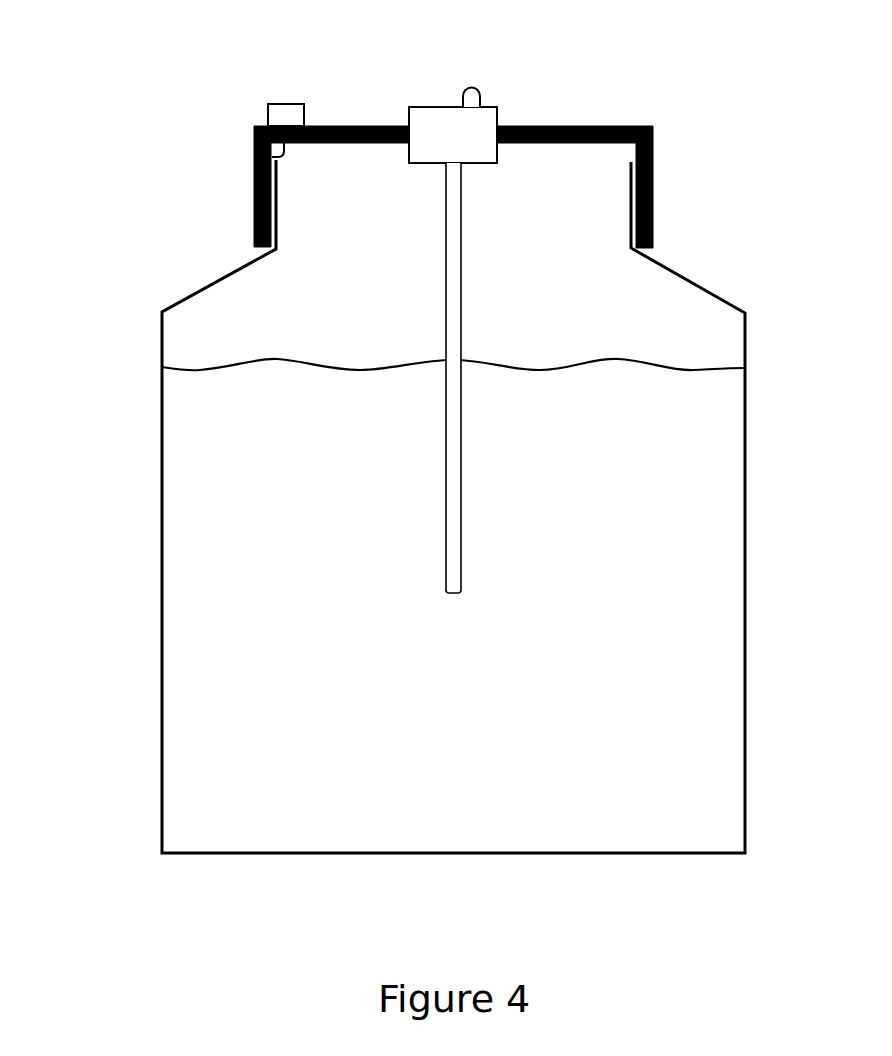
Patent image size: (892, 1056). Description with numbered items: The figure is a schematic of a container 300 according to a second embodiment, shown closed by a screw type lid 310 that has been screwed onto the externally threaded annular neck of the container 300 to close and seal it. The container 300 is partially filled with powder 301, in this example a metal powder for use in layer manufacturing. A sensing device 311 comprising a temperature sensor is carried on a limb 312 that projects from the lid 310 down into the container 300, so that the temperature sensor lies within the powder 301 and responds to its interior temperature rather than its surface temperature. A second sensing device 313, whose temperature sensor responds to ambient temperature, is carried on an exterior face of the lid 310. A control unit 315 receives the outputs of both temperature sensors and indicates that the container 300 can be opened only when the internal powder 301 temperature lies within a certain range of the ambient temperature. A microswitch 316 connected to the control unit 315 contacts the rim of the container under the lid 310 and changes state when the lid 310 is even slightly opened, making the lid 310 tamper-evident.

The container 300 is at (150, 525).
The powder 301 is at (486, 717).
The lid 310 is at (608, 126).
The sensing device 311 is at (417, 106).
The limb 312 is at (462, 533).
The second sensing device 313 is at (477, 86).
The control unit 315 is at (284, 104).
The microswitch 316 is at (254, 146).